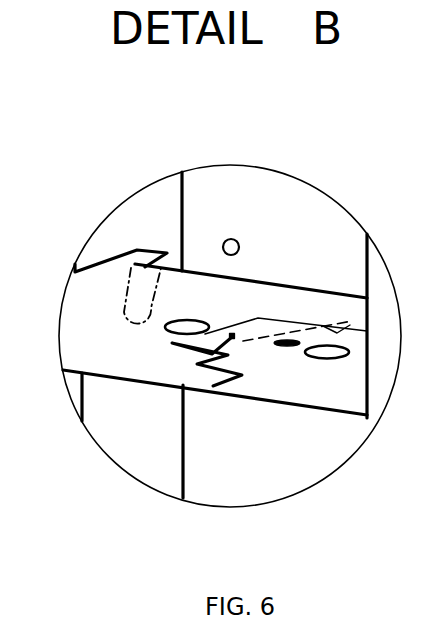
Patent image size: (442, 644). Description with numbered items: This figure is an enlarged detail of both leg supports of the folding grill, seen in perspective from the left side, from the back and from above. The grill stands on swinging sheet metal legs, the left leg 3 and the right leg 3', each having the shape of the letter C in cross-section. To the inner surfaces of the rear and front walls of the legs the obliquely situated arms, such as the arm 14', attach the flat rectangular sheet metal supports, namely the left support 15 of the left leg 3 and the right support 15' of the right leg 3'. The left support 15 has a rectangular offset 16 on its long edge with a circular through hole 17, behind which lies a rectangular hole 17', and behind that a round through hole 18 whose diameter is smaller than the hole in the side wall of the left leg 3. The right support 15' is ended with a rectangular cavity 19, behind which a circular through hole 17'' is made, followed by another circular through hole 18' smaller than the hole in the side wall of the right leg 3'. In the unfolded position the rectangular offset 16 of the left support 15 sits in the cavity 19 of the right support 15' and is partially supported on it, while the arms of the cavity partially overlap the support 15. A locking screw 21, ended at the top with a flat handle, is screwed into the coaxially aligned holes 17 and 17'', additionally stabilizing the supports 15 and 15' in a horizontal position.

The left leg 3 is at (402, 345).
The right leg 3' is at (117, 196).
The arm 14' is at (94, 253).
The left support 15 is at (223, 443).
The right support 15' is at (197, 360).
The rectangular offset 16 is at (286, 424).
The circular through hole 17 is at (173, 434).
The rectangular hole 17' is at (336, 252).
The circular through hole 17'' is at (170, 451).
The round through hole 18 is at (361, 273).
The circular through hole 18' is at (130, 419).
The rectangular cavity 19 is at (310, 230).
The locking screw 21 is at (231, 239).